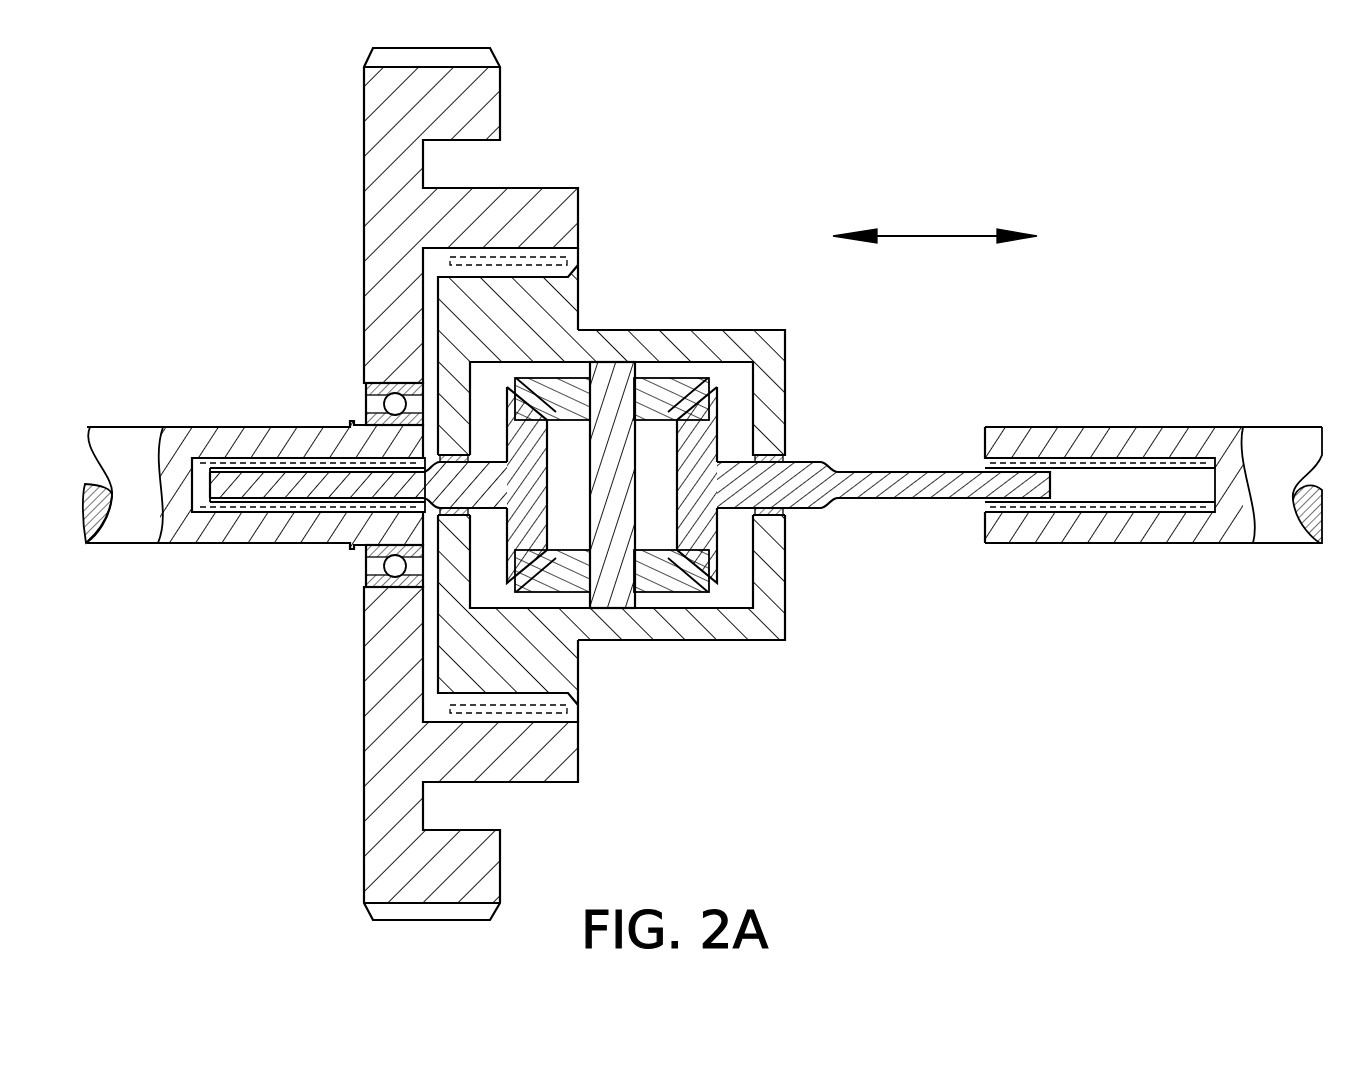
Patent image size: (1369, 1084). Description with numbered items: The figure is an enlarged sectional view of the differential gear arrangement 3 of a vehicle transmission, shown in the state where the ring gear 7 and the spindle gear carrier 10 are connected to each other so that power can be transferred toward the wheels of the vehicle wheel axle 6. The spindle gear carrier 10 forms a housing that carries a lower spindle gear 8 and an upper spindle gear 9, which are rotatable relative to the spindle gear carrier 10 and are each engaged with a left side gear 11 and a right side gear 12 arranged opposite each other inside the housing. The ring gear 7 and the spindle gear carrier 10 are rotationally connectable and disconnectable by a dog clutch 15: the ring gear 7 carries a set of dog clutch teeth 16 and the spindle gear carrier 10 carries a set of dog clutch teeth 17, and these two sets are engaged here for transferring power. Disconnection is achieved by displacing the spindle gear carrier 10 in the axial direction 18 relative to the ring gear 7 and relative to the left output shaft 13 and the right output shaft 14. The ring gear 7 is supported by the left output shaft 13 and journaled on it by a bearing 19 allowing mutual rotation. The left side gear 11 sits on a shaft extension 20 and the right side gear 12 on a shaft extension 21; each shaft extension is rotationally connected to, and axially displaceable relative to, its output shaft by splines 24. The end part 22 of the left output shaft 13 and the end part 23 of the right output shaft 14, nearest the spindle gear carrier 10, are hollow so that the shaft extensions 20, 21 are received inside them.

The differential gear arrangement 3 is at (795, 148).
The vehicle wheel axle 6 is at (1038, 400).
The ring gear 7 is at (392, 114).
The spindle gear 8 is at (657, 568).
The further spindle gear 9 is at (664, 400).
The spindle gear carrier 10 is at (733, 350).
The side gear 11 is at (527, 520).
The further side gear 12 is at (720, 423).
The output shaft 13 is at (127, 452).
The further output shaft 14 is at (1278, 452).
The dog clutch 15 is at (518, 250).
The dog clutch teeth 16 is at (574, 261).
The dog clutch teeth 17 is at (575, 712).
The axial direction 18 is at (937, 235).
The bearing 19 is at (366, 396).
The shaft extension 20 is at (318, 484).
The shaft extension 21 is at (805, 472).
The end part 22 is at (238, 443).
The end part 23 is at (1100, 445).
The splines 24 is at (254, 505).